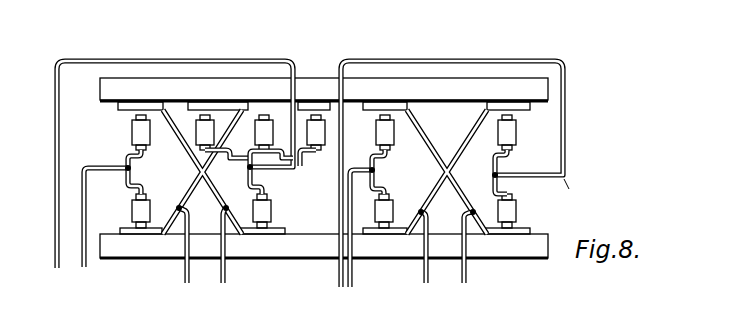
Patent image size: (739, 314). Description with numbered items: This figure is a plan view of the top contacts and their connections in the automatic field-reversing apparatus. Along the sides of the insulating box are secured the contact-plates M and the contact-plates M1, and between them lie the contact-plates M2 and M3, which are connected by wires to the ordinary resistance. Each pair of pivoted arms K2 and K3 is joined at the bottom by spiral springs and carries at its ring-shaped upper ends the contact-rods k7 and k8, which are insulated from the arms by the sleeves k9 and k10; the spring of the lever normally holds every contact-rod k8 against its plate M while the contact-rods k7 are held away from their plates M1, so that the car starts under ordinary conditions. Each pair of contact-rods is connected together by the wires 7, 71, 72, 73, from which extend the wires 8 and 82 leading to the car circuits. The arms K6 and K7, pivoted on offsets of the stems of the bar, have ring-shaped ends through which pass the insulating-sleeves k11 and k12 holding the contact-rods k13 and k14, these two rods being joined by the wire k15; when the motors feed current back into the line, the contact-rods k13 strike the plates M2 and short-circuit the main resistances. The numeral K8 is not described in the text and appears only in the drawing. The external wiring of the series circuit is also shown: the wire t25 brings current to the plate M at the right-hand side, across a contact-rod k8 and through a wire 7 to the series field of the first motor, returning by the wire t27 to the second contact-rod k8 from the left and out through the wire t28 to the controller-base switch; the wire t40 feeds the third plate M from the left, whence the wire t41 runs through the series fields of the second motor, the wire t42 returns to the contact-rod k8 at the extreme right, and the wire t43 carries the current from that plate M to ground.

The contact-plate M is at (125, 100).
The contact-plate M1 is at (135, 248).
The contact-plate M2 is at (177, 100).
The contact-plate M3 is at (303, 106).
The arm K2 is at (132, 128).
The arm K3 is at (144, 208).
The arm K6 is at (263, 124).
The arm K7 is at (326, 132).
The electromagnet coil K8 is at (384, 214).
The contact-rod k7 is at (532, 158).
The contact-rod k8 is at (270, 195).
The insulating sleeve k9 is at (130, 116).
The insulating sleeve k10 is at (137, 219).
The insulating-sleeve k11 is at (208, 114).
The insulating-sleeve k12 is at (314, 116).
The contact-rod k13 is at (221, 99).
The contact-rod k14 is at (319, 113).
The wire k15 is at (181, 208).
The wire 7 is at (127, 157).
The wire 71 is at (74, 281).
The wire 72 is at (377, 178).
The wire 73 is at (493, 178).
The wire 8 is at (110, 170).
The wire 82 is at (277, 170).
The wire t25 is at (186, 283).
The wire t27 is at (60, 117).
The wire t28 is at (226, 279).
The wire t40 is at (428, 278).
The wire t41 is at (353, 278).
The wire t42 is at (340, 286).
The wire t43 is at (466, 276).